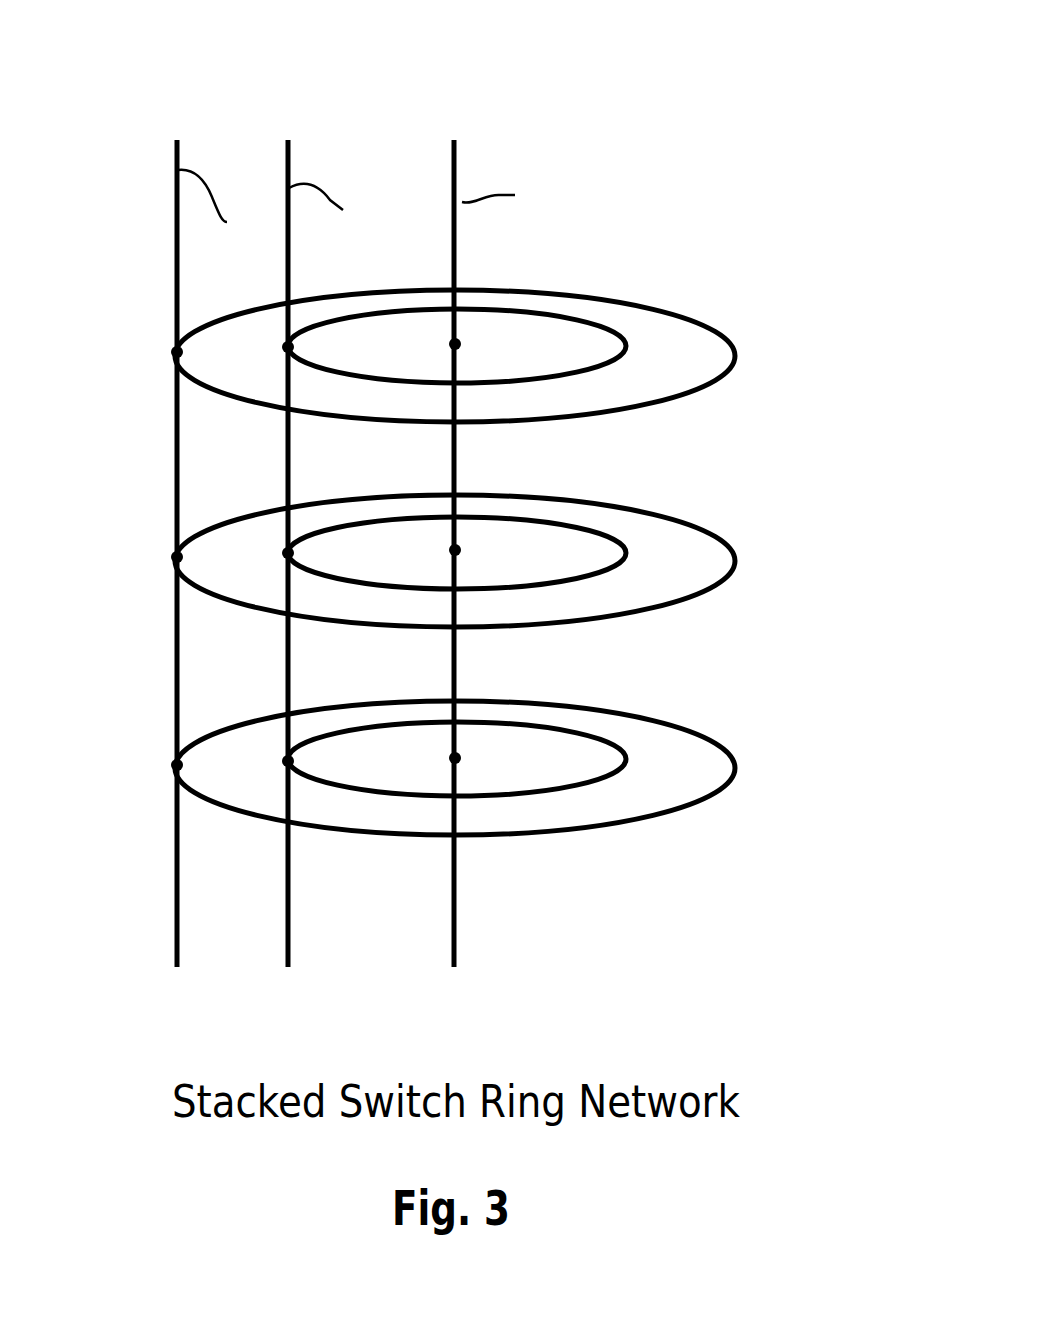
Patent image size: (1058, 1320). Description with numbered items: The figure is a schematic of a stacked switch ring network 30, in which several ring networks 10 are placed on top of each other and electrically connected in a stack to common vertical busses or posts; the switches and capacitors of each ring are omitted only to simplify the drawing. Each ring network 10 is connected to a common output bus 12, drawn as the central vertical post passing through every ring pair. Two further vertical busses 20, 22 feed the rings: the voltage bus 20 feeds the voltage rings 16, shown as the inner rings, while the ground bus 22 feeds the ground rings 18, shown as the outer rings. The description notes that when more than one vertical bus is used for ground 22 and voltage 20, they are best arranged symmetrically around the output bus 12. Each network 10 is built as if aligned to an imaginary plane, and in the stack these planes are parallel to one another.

The stacked switch ring network 30 is at (212, 103).
The ring network 10 is at (516, 558).
The ground ring 18 is at (690, 316).
The voltage ring 16 is at (602, 370).
The ground vertical bus 22 is at (168, 920).
The voltage vertical bus 20 is at (283, 930).
The output bus 12 is at (452, 927).